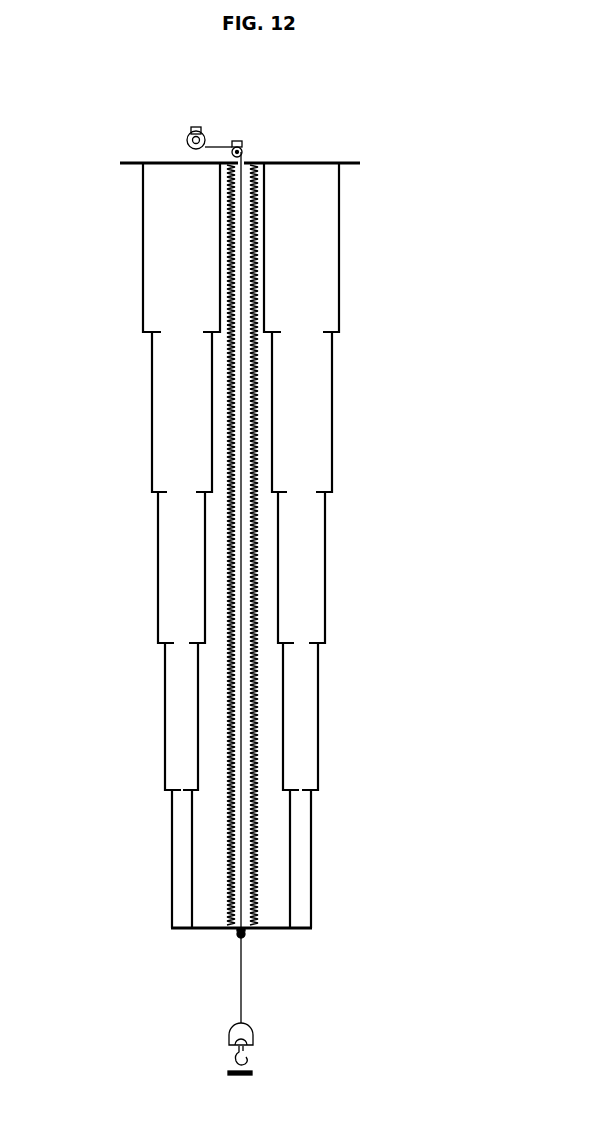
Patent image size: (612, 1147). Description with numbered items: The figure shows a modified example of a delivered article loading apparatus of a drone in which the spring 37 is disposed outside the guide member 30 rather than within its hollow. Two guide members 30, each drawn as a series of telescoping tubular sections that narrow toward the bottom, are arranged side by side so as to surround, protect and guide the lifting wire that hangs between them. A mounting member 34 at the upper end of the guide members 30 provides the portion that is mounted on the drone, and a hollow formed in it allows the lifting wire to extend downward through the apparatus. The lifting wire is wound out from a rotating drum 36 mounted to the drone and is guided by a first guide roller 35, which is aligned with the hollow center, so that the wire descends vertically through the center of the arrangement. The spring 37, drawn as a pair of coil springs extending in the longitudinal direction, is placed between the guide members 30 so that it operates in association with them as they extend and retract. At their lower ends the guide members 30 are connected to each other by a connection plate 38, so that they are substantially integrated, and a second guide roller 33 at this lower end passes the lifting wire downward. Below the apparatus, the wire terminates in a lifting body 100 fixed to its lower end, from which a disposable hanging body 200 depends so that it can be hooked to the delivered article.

The guide member 30 is at (128, 437).
The second guide roller 33 is at (253, 941).
The mounting member 34 is at (128, 160).
The first guide roller 35 is at (245, 134).
The rotating drum 36 is at (209, 119).
The spring 37 is at (257, 253).
The connection plate 38 is at (205, 931).
The lifting body 100 is at (261, 1030).
The disposable hanging body 200 is at (267, 1060).